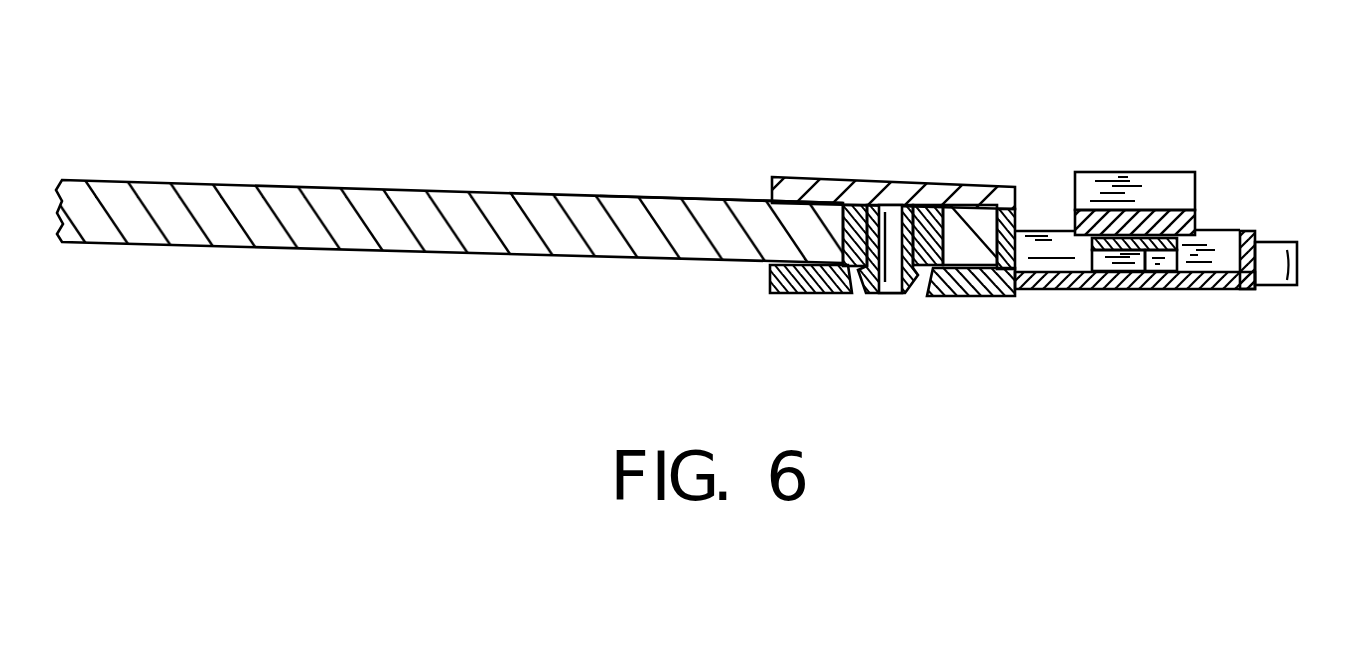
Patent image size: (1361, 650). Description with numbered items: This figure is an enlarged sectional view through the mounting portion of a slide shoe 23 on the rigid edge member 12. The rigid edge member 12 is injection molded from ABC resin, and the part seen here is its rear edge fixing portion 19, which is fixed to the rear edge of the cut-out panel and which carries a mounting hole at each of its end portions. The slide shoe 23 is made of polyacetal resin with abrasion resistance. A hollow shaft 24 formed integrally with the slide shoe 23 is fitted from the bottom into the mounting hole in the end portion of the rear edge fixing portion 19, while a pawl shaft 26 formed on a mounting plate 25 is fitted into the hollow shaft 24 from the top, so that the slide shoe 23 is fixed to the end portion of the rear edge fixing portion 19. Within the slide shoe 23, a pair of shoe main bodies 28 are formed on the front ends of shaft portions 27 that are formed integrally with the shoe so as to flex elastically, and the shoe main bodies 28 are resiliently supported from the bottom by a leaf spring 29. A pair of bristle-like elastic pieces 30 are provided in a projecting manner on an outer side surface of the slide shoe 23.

The rigid edge member 12 is at (452, 192).
The rear edge fixing portion 19 is at (641, 195).
The slide shoe 23 is at (1245, 230).
The hollow shaft 24 is at (855, 178).
The mounting plate 25 is at (946, 179).
The pawl shaft 26 is at (908, 294).
The shaft portion 27 is at (1106, 210).
The shoe main body 28 is at (1178, 172).
The leaf spring 29 is at (1148, 290).
The bristle-like elastic pieces 30 is at (1297, 281).